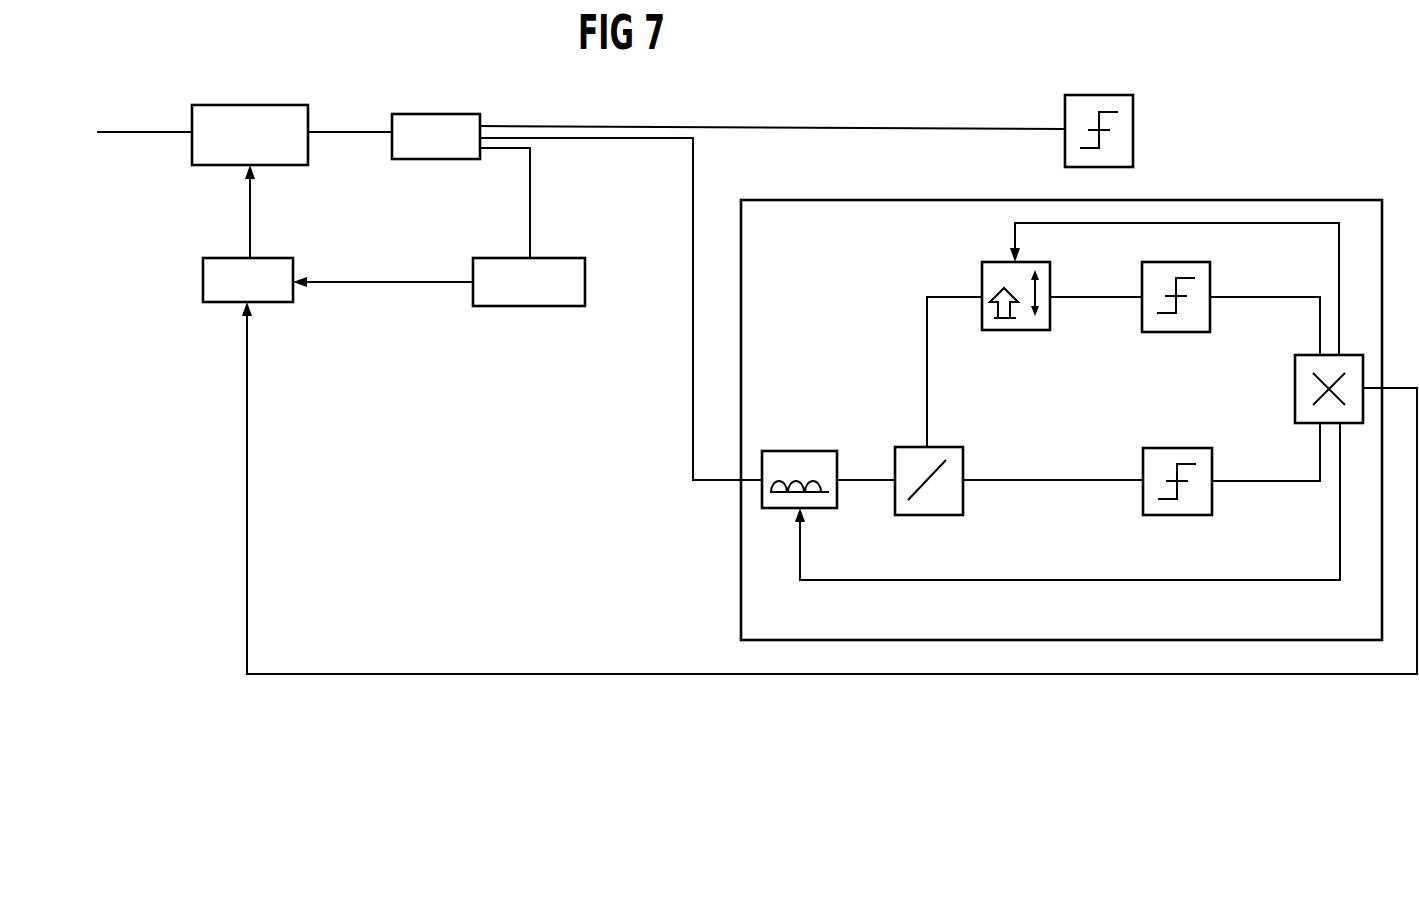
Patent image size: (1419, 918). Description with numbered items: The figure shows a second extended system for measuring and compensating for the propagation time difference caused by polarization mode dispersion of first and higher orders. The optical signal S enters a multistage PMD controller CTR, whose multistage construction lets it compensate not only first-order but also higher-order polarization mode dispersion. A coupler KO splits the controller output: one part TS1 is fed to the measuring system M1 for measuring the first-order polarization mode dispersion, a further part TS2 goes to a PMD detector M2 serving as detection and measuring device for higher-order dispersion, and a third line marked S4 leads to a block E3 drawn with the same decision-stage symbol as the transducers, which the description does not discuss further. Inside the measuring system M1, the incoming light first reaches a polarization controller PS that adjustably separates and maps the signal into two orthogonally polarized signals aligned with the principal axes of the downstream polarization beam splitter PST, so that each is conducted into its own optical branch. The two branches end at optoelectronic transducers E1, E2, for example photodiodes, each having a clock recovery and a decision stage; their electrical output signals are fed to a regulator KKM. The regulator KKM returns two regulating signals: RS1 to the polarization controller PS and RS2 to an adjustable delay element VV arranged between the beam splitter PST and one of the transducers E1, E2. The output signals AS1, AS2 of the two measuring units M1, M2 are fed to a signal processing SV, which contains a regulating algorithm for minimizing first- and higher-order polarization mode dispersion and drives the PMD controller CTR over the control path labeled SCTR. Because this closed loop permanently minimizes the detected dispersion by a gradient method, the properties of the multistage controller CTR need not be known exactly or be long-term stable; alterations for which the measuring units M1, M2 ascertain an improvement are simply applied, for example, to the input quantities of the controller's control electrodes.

The optical signal S is at (154, 120).
The multistage PMD controller CTR is at (250, 105).
The coupler KO is at (436, 114).
The output signal S4 is at (820, 112).
The decision unit E3 is at (1098, 95).
The part of the output signal TS1 is at (678, 210).
The further part of the output signal TS2 is at (543, 160).
The PMD detector M2 is at (528, 306).
The output signal AS2 is at (407, 267).
The signal processing SV is at (222, 302).
The control signal SCTR is at (234, 202).
The output signal AS1 is at (500, 658).
The measuring system M1 is at (1220, 200).
The regulating signal RS2 is at (1120, 237).
The adjustable delay element VV is at (1016, 330).
The optoelectronic transducer E2 is at (1165, 332).
The regulator KKM is at (1295, 388).
The polarization controller PS is at (800, 451).
The polarization beam splitter PST is at (930, 515).
The optoelectronic transducer E1 is at (1177, 515).
The regulating signal RS1 is at (1062, 593).